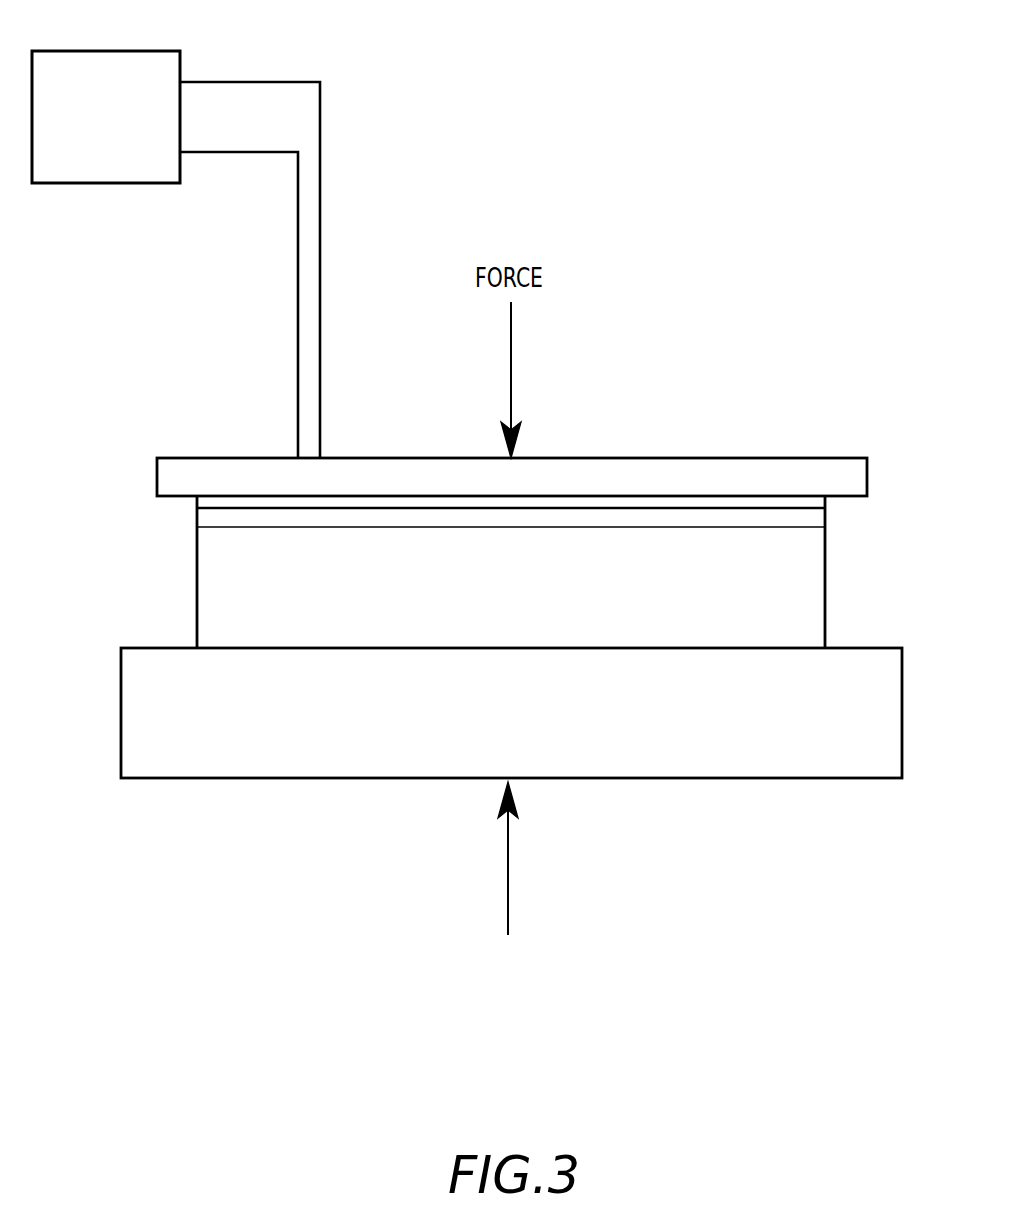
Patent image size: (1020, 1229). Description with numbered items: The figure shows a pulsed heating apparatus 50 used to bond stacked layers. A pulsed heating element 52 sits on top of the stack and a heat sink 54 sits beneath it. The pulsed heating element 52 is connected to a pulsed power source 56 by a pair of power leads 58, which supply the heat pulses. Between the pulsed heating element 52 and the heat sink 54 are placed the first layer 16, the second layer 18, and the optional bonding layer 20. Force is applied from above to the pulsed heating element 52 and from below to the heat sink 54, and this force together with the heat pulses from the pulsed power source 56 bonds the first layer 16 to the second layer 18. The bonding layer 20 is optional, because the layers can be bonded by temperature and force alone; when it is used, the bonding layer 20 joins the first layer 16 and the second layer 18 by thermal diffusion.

The pulsed heating apparatus 50 is at (662, 339).
The pulsed heating element 52 is at (790, 456).
The heat sink 54 is at (300, 780).
The pulsed power source 56 is at (86, 50).
The power leads 58 is at (318, 302).
The first layer 16 is at (196, 505).
The second layer 18 is at (826, 612).
The bonding layer 20 is at (826, 513).